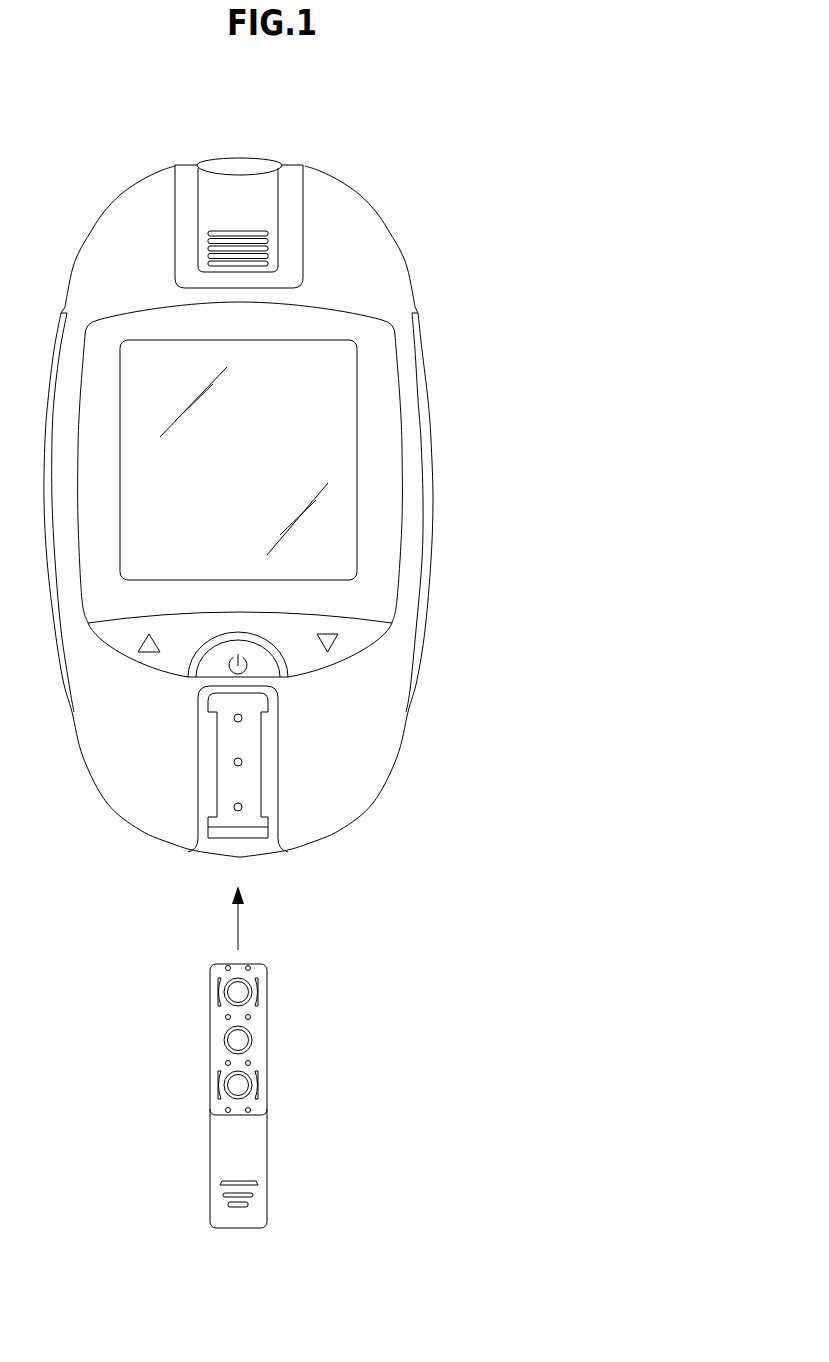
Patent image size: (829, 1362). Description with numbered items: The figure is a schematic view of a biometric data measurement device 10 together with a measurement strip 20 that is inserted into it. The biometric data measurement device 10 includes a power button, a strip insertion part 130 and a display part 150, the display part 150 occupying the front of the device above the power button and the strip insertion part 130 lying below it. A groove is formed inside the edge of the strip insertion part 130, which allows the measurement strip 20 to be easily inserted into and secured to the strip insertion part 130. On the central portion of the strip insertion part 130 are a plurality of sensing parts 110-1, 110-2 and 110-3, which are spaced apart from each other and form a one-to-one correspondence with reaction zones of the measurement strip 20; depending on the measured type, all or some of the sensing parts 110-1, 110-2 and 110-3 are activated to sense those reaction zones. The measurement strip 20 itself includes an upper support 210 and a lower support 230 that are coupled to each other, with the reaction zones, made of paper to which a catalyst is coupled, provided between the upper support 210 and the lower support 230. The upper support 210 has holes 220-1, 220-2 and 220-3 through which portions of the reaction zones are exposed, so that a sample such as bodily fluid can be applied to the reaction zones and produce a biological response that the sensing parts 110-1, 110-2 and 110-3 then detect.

The biometric data measurement device 10 is at (285, 528).
The display part 150 is at (335, 523).
The strip insertion part 130 is at (228, 820).
The sensing part 110-1 is at (242, 716).
The sensing part 110-2 is at (242, 762).
The sensing part 110-3 is at (242, 807).
The measurement strip 20 is at (276, 1101).
The upper support 210 is at (215, 1048).
The hole 220-1 is at (243, 995).
The hole 220-2 is at (243, 1043).
The hole 220-3 is at (243, 1088).
The lower support 230 is at (217, 1205).